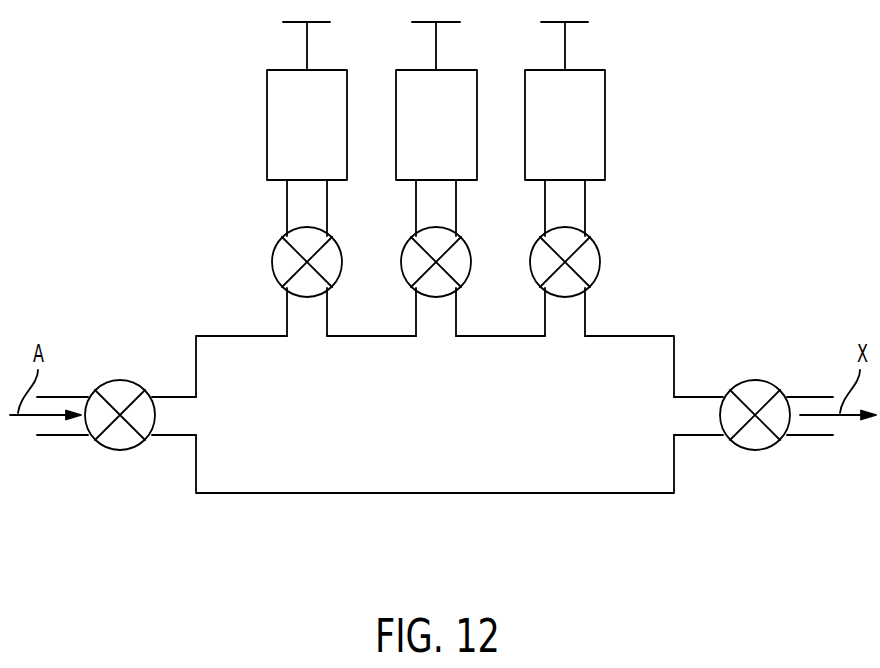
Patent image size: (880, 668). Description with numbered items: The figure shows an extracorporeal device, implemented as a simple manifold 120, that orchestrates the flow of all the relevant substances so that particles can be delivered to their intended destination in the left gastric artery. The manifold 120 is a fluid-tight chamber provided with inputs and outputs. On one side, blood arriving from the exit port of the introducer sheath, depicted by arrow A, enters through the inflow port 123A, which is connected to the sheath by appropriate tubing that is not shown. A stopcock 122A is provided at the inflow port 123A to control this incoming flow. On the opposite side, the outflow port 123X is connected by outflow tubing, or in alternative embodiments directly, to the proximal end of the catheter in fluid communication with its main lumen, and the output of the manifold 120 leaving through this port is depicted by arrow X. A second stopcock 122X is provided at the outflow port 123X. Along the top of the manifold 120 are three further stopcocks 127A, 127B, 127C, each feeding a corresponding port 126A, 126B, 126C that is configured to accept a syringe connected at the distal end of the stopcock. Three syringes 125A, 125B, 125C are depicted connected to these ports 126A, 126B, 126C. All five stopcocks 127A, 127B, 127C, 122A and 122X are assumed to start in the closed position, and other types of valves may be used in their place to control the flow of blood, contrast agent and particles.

The manifold 120 is at (280, 495).
The stopcock 122A is at (118, 380).
The stopcock 122X is at (755, 380).
The inflow port 123A is at (74, 462).
The outflow port 123X is at (807, 462).
The syringe 125A is at (267, 85).
The syringe 125B is at (396, 85).
The syringe 125C is at (605, 85).
The port 126A is at (270, 203).
The port 126B is at (464, 200).
The port 126C is at (600, 200).
The stopcock 127A is at (273, 251).
The stopcock 127B is at (403, 251).
The stopcock 127C is at (598, 250).